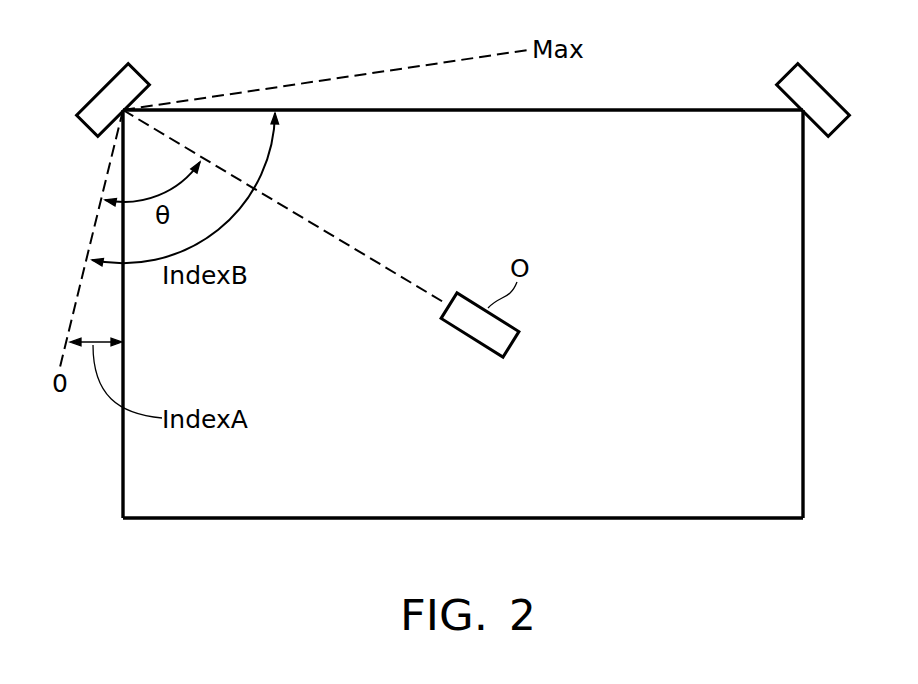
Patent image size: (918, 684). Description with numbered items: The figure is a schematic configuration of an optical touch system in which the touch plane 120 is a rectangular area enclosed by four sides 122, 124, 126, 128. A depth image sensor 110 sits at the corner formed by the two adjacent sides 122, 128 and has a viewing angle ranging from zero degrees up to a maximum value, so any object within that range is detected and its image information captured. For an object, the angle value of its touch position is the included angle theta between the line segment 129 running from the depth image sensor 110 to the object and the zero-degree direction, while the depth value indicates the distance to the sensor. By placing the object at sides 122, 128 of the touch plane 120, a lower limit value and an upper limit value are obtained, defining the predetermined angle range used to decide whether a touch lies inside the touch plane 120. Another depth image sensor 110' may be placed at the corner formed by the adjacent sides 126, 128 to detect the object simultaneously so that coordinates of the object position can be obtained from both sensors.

The depth image sensor 110 is at (136, 76).
The depth image sensor 110' is at (792, 76).
The touch plane 120 is at (467, 316).
The side 122 is at (122, 470).
The side 124 is at (658, 520).
The side 126 is at (805, 470).
The side 128 is at (657, 109).
The line segment 129 is at (393, 268).